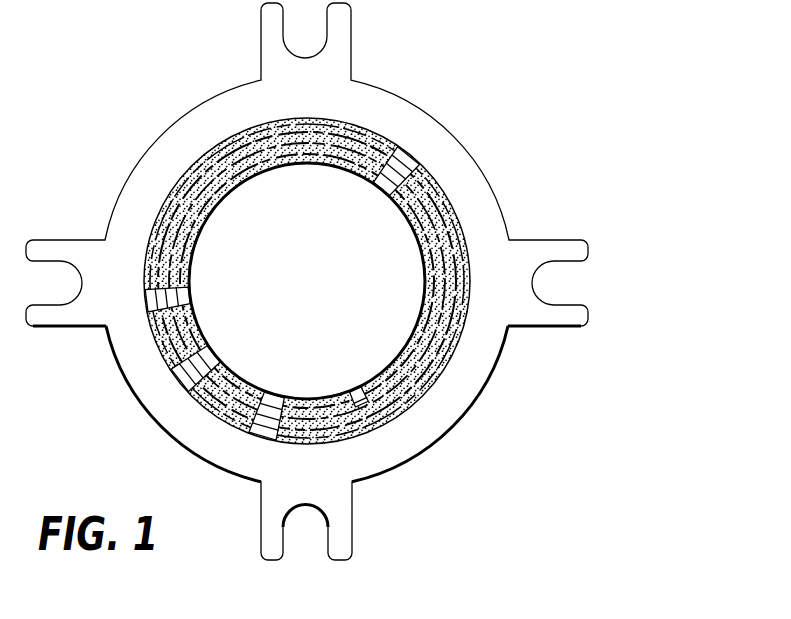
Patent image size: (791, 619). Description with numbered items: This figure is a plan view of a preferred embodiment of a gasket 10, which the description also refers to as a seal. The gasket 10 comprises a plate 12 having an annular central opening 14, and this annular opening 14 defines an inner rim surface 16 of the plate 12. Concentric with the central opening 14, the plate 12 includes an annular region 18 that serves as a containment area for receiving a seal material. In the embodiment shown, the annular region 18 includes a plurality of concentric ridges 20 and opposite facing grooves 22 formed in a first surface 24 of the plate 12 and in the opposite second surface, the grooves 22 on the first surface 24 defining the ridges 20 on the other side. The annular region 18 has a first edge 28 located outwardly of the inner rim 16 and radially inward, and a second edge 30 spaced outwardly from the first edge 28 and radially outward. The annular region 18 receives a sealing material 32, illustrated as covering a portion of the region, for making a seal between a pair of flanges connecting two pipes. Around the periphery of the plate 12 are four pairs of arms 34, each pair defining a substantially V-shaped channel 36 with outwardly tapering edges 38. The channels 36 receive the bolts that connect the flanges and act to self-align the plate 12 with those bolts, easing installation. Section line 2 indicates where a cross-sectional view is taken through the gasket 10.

The gasket 10 is at (500, 88).
The plate 12 is at (473, 180).
The annular central opening 14 is at (378, 207).
The inner rim surface 16 is at (397, 362).
The annular region 18 is at (460, 232).
The concentric ridges 20 is at (273, 403).
The grooves 22 is at (190, 373).
The first surface 24 is at (222, 449).
The first edge 28 is at (357, 392).
The second edge 30 is at (410, 407).
The sealing material 32 is at (170, 298).
The arms 34 is at (273, 533).
The V-shaped channel 36 is at (305, 537).
The outwardly tapering edges 38 is at (305, 557).
The section line 2- 2 is at (580, 282).